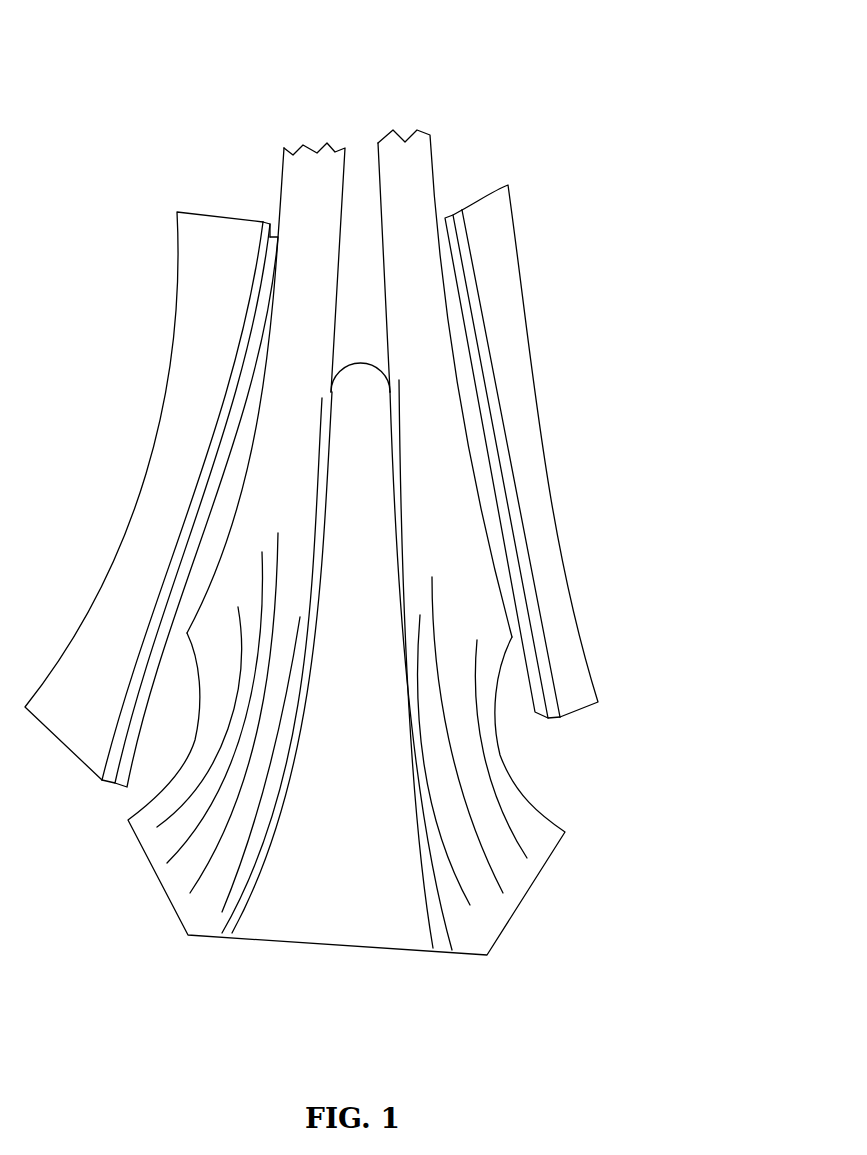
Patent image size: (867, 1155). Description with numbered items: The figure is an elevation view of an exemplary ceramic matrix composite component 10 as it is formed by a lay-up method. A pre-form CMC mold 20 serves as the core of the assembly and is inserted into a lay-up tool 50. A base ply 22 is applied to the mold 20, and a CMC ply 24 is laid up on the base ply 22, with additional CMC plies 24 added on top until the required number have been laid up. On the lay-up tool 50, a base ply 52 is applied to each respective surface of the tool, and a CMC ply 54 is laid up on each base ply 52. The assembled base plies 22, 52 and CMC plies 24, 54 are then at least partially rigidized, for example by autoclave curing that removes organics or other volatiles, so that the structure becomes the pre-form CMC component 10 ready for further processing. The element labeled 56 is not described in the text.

The CMC component 10 is at (557, 90).
The pre-form CMC mold 20 is at (277, 947).
The base ply 22 is at (330, 433).
The CMC ply 24 is at (402, 525).
The lay-up tool 50 is at (202, 213).
The base ply 52 is at (257, 263).
The CMC ply 54 is at (273, 300).
The inner layer strip 56 is at (243, 337).